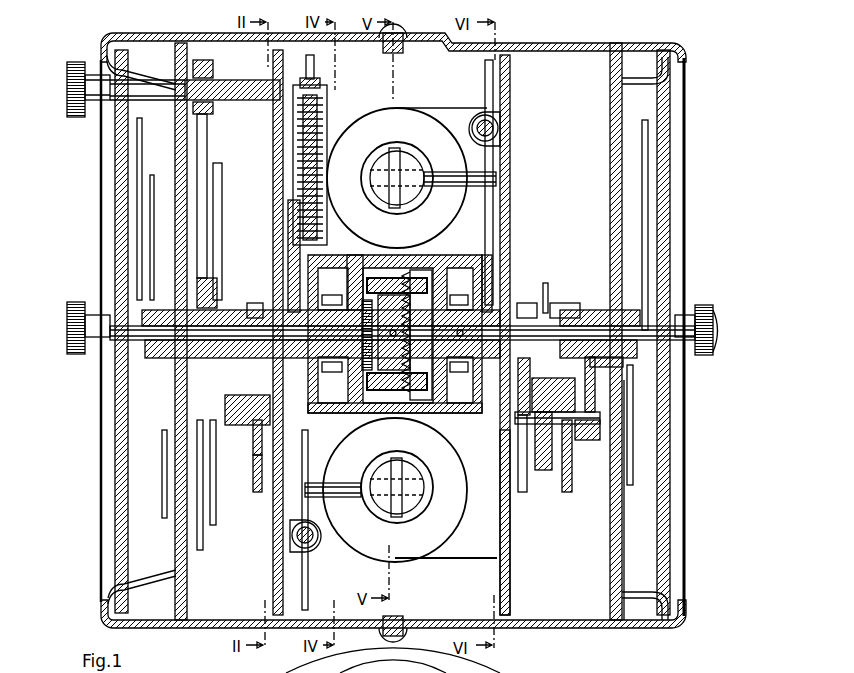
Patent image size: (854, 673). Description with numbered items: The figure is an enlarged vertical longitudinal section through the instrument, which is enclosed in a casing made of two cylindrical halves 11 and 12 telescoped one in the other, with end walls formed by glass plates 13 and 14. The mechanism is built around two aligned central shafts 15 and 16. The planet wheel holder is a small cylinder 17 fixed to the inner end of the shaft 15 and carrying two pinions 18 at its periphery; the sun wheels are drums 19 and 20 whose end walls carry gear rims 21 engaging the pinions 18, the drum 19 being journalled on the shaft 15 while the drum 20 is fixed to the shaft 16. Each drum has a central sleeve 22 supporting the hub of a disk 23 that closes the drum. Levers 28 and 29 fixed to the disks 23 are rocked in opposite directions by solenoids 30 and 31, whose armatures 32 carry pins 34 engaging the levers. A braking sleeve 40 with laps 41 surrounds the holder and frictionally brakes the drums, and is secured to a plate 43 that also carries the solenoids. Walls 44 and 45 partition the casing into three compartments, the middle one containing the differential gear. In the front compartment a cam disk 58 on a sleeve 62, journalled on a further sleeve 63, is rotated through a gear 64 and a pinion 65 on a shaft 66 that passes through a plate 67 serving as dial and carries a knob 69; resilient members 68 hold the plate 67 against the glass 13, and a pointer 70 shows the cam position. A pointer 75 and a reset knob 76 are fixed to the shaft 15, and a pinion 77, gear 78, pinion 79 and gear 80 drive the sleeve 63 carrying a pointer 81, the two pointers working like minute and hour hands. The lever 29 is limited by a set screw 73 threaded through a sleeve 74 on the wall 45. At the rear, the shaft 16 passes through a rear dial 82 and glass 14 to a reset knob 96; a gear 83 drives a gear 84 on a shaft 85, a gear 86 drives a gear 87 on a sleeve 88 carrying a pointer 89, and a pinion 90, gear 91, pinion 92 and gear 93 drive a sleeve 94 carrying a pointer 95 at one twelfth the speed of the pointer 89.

The cylindrical casing half 11 is at (180, 34).
The cylindrical casing half 12 is at (597, 44).
The glass plate 13 is at (118, 483).
The glass plate 14 is at (670, 498).
The central shaft 15 is at (117, 317).
The central shaft 16 is at (672, 317).
The planet wheel holder cylinder 17 is at (440, 418).
The pinion 18 is at (378, 418).
The sun wheel drum 19 is at (333, 253).
The sun wheel drum 20 is at (473, 253).
The gear rim 21 is at (482, 432).
The central sleeve 22 is at (510, 273).
The disk 23 is at (492, 262).
The lever 28 is at (297, 567).
The lever 29 is at (490, 207).
The solenoid 30 is at (362, 537).
The solenoid 31 is at (412, 123).
The armature 32 is at (403, 507).
The pin 34 is at (332, 495).
The braking sleeve 40 is at (410, 418).
The lap 41 is at (347, 440).
The plate 43 is at (485, 548).
The wall 44 is at (272, 593).
The wall 45 is at (510, 583).
The cam disk 58 is at (217, 523).
The sleeve 62 is at (222, 300).
The sleeve 63 is at (147, 350).
The gear 64 is at (208, 143).
The pinion 65 is at (213, 68).
The shaft 66 is at (235, 103).
The plate 67 is at (175, 552).
The resilient member 68 is at (140, 588).
The knob 69 is at (73, 77).
The pointer 70 is at (163, 508).
The set screw 73 is at (495, 127).
The sleeve 74 is at (508, 90).
The pointer 75 is at (137, 190).
The knob 76 is at (73, 322).
The pinion 77 is at (258, 302).
The gear 78 is at (253, 487).
The pinion 79 is at (252, 455).
The gear 80 is at (230, 395).
The pointer 81 is at (150, 215).
The rear dial 82 is at (622, 553).
The first gear 83 is at (533, 290).
The second gear 84 is at (523, 493).
The shaft 85 is at (620, 420).
The third gear 86 is at (547, 470).
The fourth gear 87 is at (547, 283).
The sleeve 88 is at (653, 317).
The pointer 89 is at (648, 167).
The pinion 90 is at (557, 303).
The gear 91 is at (573, 492).
The pinion 92 is at (580, 445).
The gear 93 is at (597, 383).
The sleeve 94 is at (623, 313).
The pointer 95 is at (633, 462).
The knob 96 is at (712, 308).